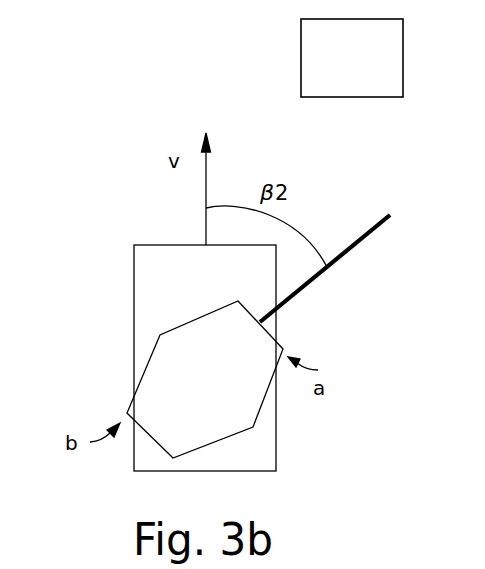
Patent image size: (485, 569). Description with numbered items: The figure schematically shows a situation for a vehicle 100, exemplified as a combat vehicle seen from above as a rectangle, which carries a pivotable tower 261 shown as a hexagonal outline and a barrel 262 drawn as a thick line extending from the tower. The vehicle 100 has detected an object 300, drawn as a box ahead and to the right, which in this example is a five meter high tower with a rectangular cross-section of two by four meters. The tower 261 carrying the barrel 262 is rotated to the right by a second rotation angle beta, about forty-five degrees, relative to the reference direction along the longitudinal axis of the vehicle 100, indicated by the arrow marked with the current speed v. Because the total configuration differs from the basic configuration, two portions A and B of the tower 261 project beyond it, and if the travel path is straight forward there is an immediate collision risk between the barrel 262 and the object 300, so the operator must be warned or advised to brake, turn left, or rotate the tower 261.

The vehicle 100 is at (148, 245).
The pivotable tower 261 is at (160, 335).
The barrel 262 is at (312, 286).
The object 300 is at (331, 70).